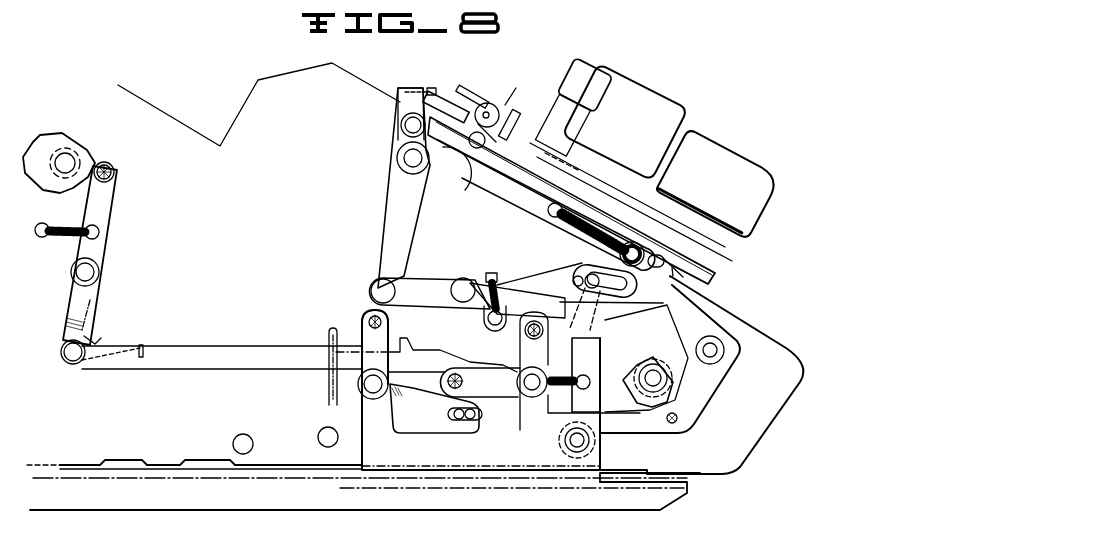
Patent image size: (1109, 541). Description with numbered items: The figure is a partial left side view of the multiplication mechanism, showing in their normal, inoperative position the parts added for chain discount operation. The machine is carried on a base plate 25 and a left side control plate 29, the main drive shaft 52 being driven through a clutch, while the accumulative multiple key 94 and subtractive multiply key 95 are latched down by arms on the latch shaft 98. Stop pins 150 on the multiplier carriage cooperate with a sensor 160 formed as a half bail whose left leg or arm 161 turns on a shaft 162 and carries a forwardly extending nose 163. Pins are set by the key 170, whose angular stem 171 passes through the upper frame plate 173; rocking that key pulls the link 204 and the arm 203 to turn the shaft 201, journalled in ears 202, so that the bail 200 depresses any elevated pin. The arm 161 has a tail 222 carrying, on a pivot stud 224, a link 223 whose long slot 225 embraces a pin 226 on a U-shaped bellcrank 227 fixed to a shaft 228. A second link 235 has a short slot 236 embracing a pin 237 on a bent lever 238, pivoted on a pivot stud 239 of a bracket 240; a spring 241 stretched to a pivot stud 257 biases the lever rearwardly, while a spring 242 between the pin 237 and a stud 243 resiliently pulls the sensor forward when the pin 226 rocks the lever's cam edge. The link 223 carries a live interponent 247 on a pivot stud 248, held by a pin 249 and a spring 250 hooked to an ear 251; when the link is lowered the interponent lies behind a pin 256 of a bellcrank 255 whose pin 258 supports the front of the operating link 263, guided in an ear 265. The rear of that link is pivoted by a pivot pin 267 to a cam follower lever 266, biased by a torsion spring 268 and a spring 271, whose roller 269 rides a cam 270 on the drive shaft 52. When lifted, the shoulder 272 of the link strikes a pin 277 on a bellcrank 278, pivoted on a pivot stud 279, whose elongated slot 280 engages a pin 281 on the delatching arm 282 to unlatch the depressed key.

The base plate 25 is at (640, 510).
The left side control plate 29 is at (768, 333).
The main drive shaft 52 is at (70, 155).
The accumulative multiple key 94 is at (723, 147).
The subtractive multiply key 95 is at (653, 105).
The latch shaft 98 is at (662, 381).
The stop pins 150 is at (448, 100).
The sensor 160 is at (410, 87).
The arm 161 is at (400, 108).
The shaft 162 is at (396, 160).
The nose 163 is at (430, 86).
The key 170 is at (575, 75).
The angular stem 171 is at (558, 115).
The upper frame plate 173 is at (706, 272).
The bail 200 is at (468, 92).
The shaft 201 is at (487, 110).
The ears 202 is at (507, 128).
The arm 203 is at (500, 117).
The link 204 is at (503, 157).
The tail 222 is at (386, 228).
The link 223 is at (424, 283).
The pivot stud 224 is at (372, 286).
The long slot 225 is at (585, 272).
The pin 226 is at (596, 288).
The U-shaped bellcrank 227 is at (677, 318).
The shaft 228 is at (718, 358).
The second link 235 is at (507, 186).
The short slot 236 is at (660, 258).
The pin 237 is at (640, 248).
The bent lever 238 is at (594, 354).
The pivot stud 239 is at (572, 445).
The bracket 240 is at (418, 463).
The spring 241 is at (562, 388).
The spring 242 is at (592, 223).
The stud 243 is at (550, 217).
The live interponent 247 is at (536, 300).
The pivot stud 248 is at (462, 280).
The pin 249 is at (492, 326).
The spring 250 is at (500, 290).
The ear 251 is at (489, 273).
The bellcrank 255 is at (493, 392).
The pin 256 is at (534, 339).
The pivot stud 257 is at (533, 392).
The pin 258 is at (455, 372).
The operating link 263 is at (246, 364).
The ear 265 is at (329, 340).
The cam follower lever 266 is at (107, 207).
The pivot pin 267 is at (66, 363).
The torsion spring 268 is at (100, 340).
The roller 269 is at (112, 178).
The cam 270 is at (38, 138).
The spring 271 is at (67, 238).
The shoulder 272 is at (413, 343).
The pin 277 is at (366, 318).
The bellcrank 278 is at (402, 415).
The pivot stud 279 is at (360, 398).
The elongated slot 280 is at (472, 420).
The pin 281 is at (458, 420).
The arm 282 is at (637, 383).